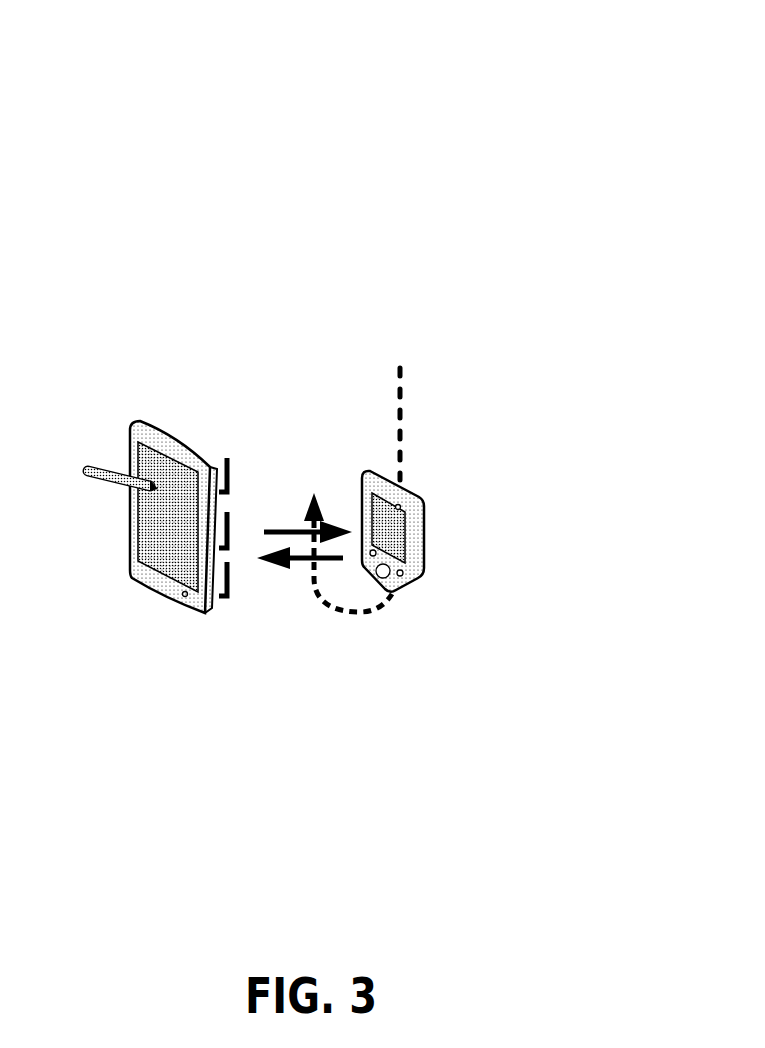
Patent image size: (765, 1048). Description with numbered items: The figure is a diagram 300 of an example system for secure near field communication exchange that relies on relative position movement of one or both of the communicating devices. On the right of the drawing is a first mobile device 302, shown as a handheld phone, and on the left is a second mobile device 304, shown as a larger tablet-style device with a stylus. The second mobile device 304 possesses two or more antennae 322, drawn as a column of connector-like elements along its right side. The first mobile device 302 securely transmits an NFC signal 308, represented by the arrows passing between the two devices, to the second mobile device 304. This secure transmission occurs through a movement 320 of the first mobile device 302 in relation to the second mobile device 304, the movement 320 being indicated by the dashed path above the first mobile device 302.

The diagram 300 is at (520, 90).
The first mobile device 302 is at (440, 503).
The second mobile device 304 is at (135, 405).
The NFC signal 308 is at (287, 595).
The movement 320 is at (415, 398).
The antennae 322 is at (242, 576).